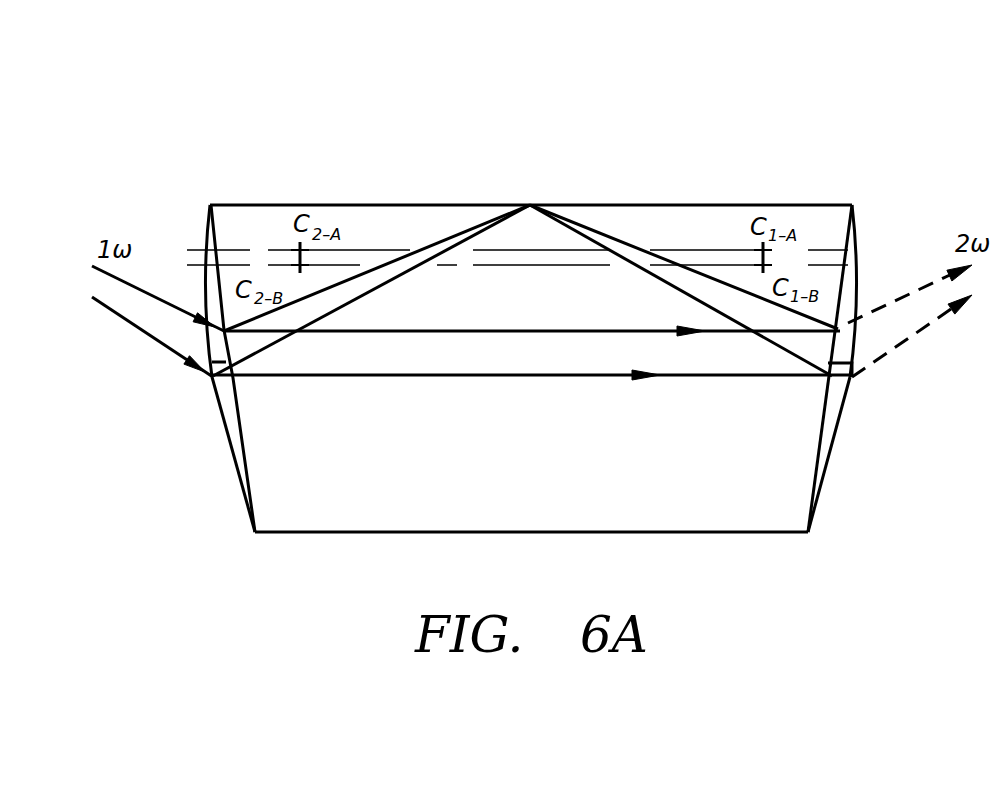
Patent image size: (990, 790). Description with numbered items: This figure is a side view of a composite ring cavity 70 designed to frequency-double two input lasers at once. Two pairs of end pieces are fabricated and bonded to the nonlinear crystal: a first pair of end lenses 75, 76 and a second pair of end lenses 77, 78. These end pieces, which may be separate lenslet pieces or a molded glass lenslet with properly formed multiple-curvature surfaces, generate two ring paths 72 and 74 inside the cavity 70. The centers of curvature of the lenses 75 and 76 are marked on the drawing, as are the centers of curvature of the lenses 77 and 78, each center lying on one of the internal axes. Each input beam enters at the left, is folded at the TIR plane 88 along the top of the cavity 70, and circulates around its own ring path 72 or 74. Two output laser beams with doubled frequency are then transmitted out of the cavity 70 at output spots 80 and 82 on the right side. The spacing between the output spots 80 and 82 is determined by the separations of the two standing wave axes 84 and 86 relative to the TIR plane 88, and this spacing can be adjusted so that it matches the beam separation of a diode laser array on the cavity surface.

The cavity 70 is at (519, 178).
The ring path 72 is at (553, 333).
The ring path 74 is at (548, 380).
The end lens 75 is at (207, 289).
The end lens 76 is at (856, 231).
The end lens 77 is at (230, 438).
The end lens 78 is at (828, 437).
The output spot 80 is at (850, 320).
The output spot 82 is at (845, 410).
The standing wave axis 84 is at (500, 252).
The standing wave axis 86 is at (555, 266).
The TIR plane 88 is at (719, 204).